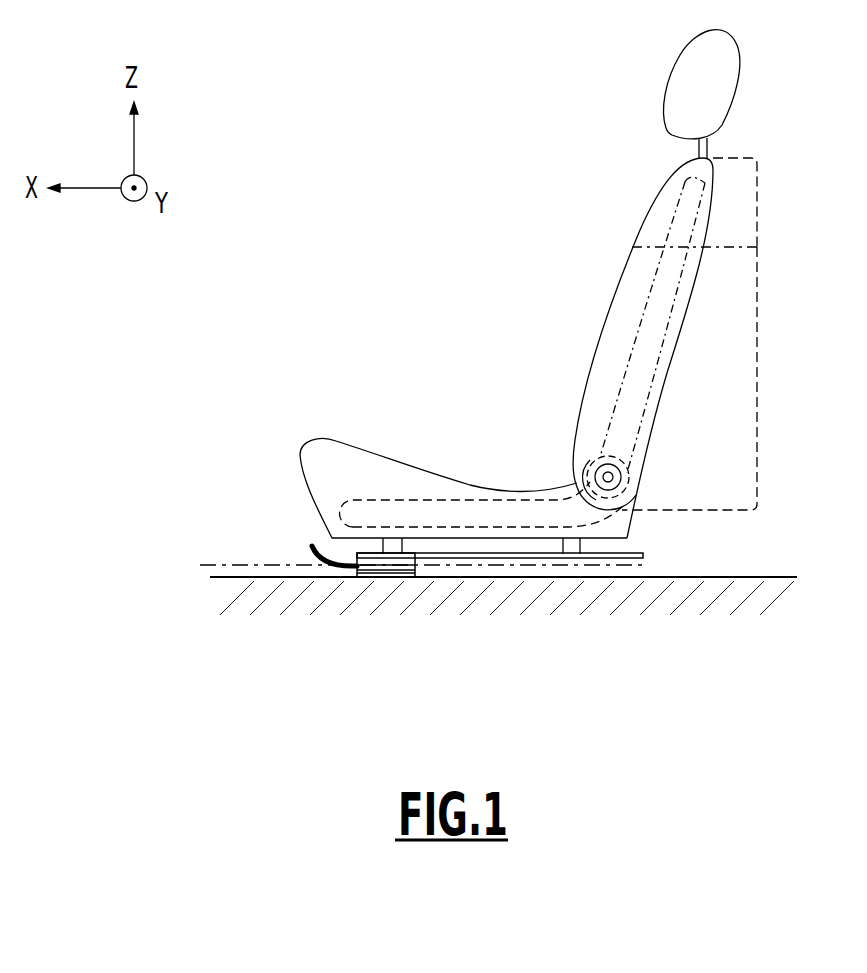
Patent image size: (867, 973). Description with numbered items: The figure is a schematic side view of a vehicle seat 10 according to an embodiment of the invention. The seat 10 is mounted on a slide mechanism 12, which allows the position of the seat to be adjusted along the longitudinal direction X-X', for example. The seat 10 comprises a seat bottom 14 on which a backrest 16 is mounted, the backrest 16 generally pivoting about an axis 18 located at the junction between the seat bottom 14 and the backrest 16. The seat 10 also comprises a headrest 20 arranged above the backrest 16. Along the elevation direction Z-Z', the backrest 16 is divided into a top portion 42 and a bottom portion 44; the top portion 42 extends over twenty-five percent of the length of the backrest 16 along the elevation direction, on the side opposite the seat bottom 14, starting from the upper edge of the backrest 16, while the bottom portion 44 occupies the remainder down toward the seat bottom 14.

The seat 10 is at (407, 308).
The slide mechanism 12 is at (280, 512).
The seat bottom 14 is at (330, 466).
The backrest 16 is at (640, 278).
The axis 18 is at (614, 477).
The headrest 20 is at (652, 95).
The top portion 42 is at (760, 158).
The bottom portion 44 is at (760, 247).